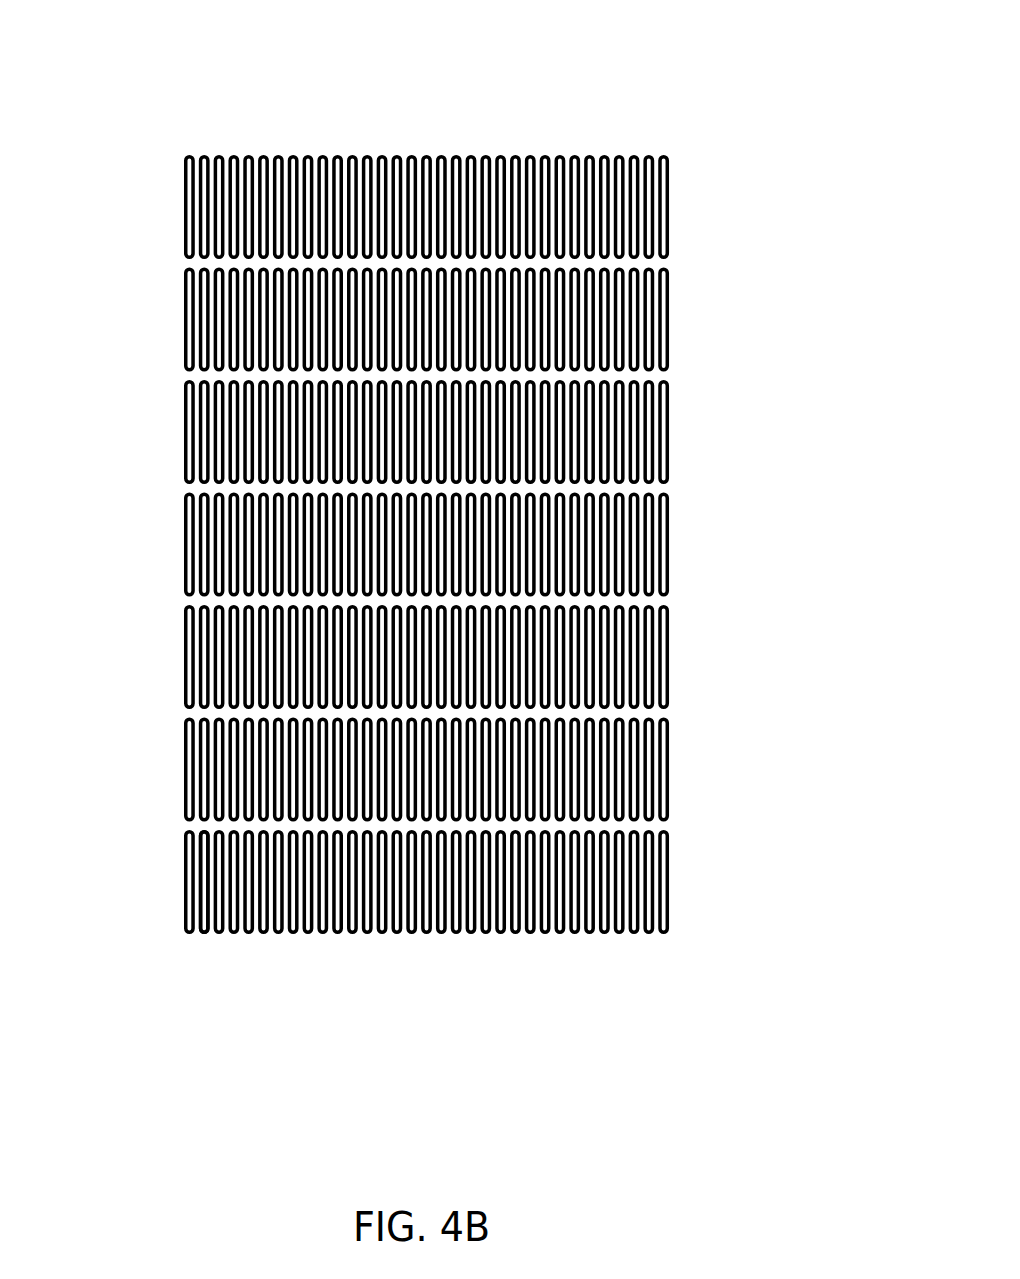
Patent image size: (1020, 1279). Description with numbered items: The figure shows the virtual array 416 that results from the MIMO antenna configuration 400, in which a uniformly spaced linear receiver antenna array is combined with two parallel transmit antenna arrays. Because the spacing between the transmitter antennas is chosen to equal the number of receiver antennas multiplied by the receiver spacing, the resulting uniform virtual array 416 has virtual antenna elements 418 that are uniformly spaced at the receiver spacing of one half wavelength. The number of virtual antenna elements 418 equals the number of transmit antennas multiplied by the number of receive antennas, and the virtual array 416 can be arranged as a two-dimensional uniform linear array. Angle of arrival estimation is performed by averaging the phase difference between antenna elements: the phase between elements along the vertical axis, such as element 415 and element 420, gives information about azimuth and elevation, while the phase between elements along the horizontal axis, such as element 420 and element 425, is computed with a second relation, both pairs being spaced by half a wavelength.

The MIMO antenna configuration 400 is at (754, 67).
The virtual array 416 is at (115, 175).
The virtual antenna elements 418 is at (661, 303).
The element 415 is at (177, 803).
The element 420 is at (177, 888).
The element 425 is at (202, 929).